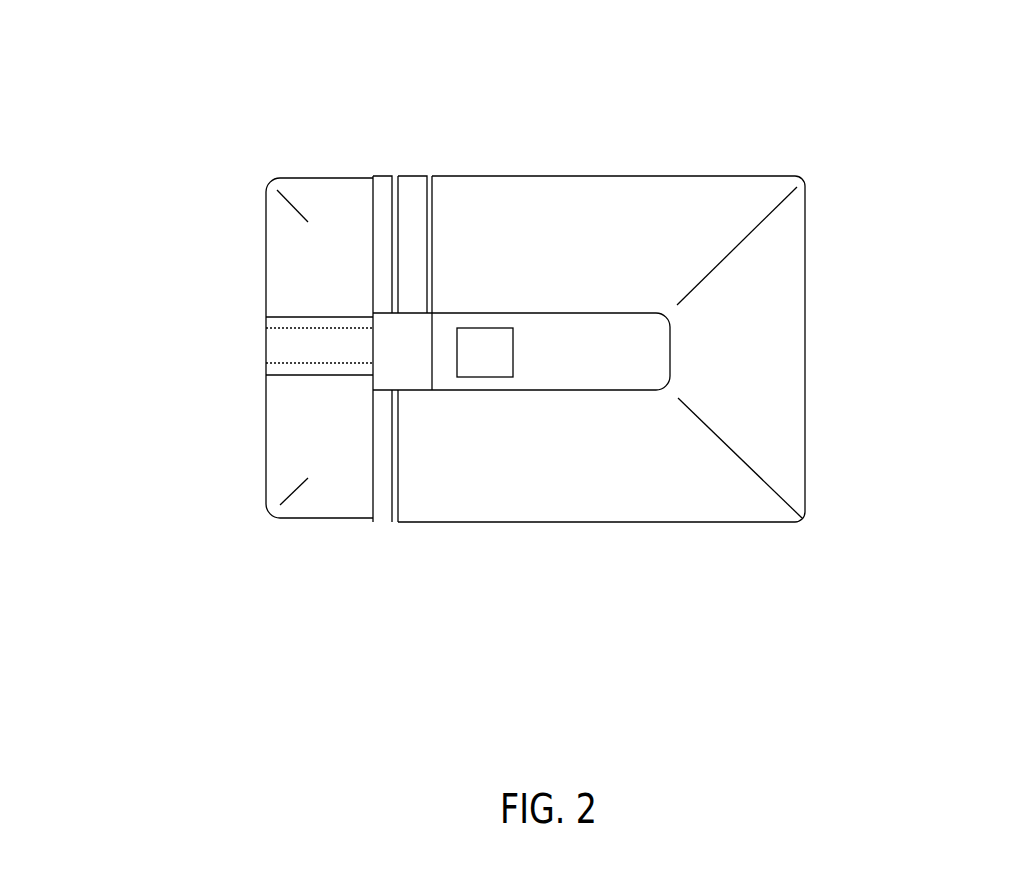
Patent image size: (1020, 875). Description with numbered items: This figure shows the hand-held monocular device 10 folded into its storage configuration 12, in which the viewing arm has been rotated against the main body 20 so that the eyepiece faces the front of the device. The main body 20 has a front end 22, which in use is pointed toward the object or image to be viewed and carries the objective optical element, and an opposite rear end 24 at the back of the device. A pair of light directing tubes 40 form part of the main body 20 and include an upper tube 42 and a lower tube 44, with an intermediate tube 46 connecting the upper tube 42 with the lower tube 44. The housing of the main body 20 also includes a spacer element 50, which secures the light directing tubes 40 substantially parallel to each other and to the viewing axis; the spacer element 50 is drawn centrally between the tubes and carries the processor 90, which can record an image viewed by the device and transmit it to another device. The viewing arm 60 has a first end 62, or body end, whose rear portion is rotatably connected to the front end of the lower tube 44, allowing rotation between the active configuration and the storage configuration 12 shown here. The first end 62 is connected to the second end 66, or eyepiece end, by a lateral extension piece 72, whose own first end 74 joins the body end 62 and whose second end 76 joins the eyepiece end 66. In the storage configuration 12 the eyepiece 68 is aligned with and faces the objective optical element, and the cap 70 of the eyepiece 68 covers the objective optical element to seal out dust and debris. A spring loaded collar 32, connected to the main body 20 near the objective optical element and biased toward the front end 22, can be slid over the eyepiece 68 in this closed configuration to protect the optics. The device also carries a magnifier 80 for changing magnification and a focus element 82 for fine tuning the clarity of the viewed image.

The hand-held monocular device 10 is at (633, 105).
The storage configuration 12 is at (472, 361).
The main body 20 is at (747, 147).
The front end 22 is at (398, 540).
The rear end 24 is at (806, 233).
The spring loaded collar 32 is at (407, 178).
The light directing tubes 40 is at (601, 349).
The upper tube 42 is at (485, 173).
The lower tube 44 is at (498, 525).
The intermediate tube 46 is at (806, 427).
The spacer element 50 is at (583, 357).
The viewing arm 60 is at (192, 250).
The first end 62 is at (318, 520).
The second end 66 is at (303, 178).
The eyepiece 68 is at (380, 178).
The cap 70 is at (382, 349).
The lateral extension piece 72 is at (266, 355).
The first end of lateral extension piece 74 is at (267, 463).
The second end of lateral extension piece 76 is at (263, 218).
The magnifier 80 is at (266, 315).
The focus element 82 is at (266, 370).
The processor 90 is at (498, 359).